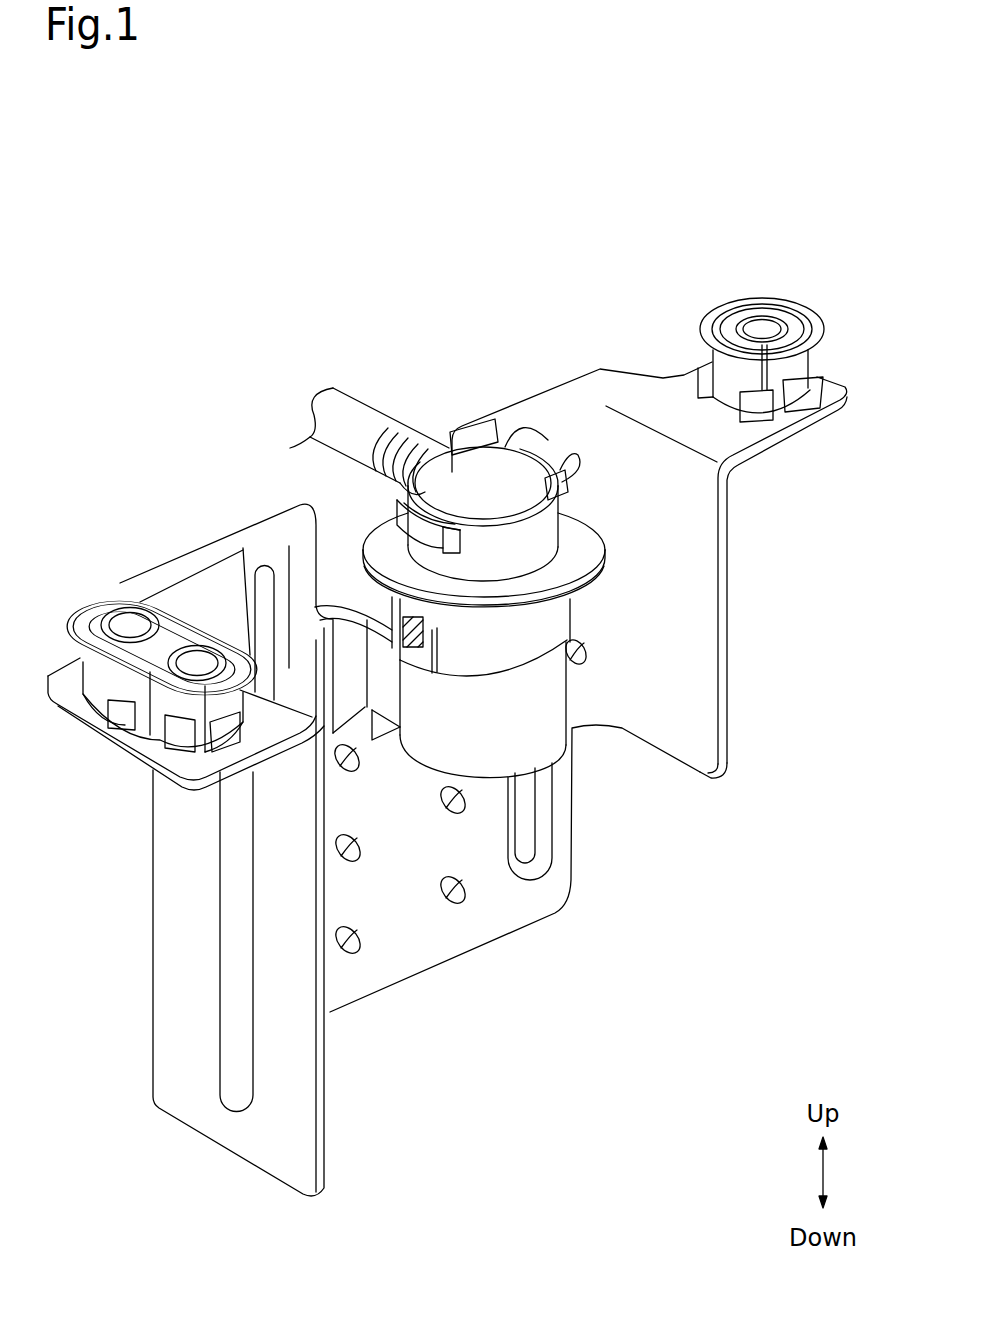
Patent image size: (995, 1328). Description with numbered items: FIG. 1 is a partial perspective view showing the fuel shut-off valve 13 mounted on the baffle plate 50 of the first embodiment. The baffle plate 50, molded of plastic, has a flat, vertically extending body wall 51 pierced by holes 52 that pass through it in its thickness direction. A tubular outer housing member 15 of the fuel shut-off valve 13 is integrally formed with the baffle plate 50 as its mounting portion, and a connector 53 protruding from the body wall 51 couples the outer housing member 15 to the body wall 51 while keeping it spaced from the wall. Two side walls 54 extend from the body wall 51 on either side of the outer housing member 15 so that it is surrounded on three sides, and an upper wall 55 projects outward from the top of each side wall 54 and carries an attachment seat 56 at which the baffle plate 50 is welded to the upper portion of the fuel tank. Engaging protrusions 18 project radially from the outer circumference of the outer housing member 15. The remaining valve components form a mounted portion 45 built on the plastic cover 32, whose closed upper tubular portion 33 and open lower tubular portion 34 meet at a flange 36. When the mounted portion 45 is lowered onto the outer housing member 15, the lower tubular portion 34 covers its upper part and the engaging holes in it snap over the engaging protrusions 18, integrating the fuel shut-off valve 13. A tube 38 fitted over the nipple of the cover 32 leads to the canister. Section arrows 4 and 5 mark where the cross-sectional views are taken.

The fuel shut-off valve 13 is at (473, 542).
The mounted portion 45 is at (449, 395).
The upper tubular portion 33 is at (492, 462).
The cover 32 is at (488, 460).
The tube 38 is at (350, 440).
The flange 36 is at (590, 537).
The lower tubular portion 34 is at (567, 612).
The engaging protrusion 18 is at (417, 647).
The outer housing member 15 is at (573, 750).
The baffle plate 50 is at (441, 1077).
The body wall 51 is at (430, 960).
The holes 52 is at (350, 767).
The connector 53 is at (380, 670).
The side walls 54 is at (310, 1090).
The upper wall 55 is at (120, 727).
The attachment seat 56 is at (95, 620).
The section line IV 4 is at (263, 381).
The section line V 5 is at (358, 543).